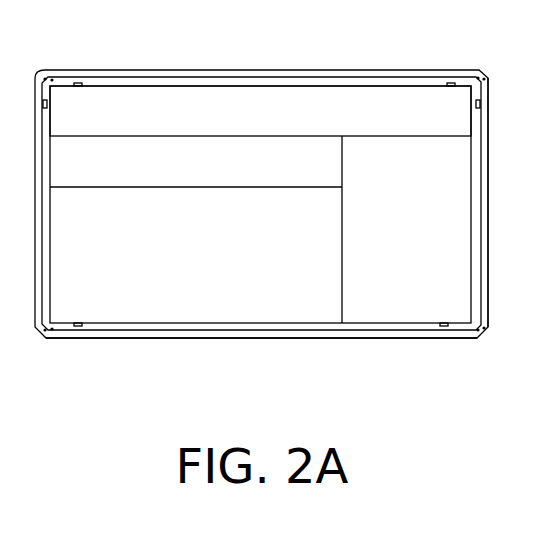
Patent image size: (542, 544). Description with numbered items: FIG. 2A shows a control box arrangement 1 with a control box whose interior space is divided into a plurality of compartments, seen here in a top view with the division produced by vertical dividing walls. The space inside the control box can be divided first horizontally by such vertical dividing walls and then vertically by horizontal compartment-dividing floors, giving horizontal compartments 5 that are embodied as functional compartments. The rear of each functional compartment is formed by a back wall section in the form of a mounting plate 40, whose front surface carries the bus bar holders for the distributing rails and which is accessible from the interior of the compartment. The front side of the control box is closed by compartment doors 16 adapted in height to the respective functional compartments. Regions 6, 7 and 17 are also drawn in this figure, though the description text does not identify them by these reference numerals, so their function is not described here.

The control box arrangement 1 is at (261, 234).
The horizontal compartment 5 is at (98, 313).
The display panel 6 is at (418, 300).
The upper housing portion 7 is at (293, 100).
The compartment door 16 is at (203, 337).
The side frame portion 17 is at (393, 335).
The mounting plate 40 is at (168, 188).